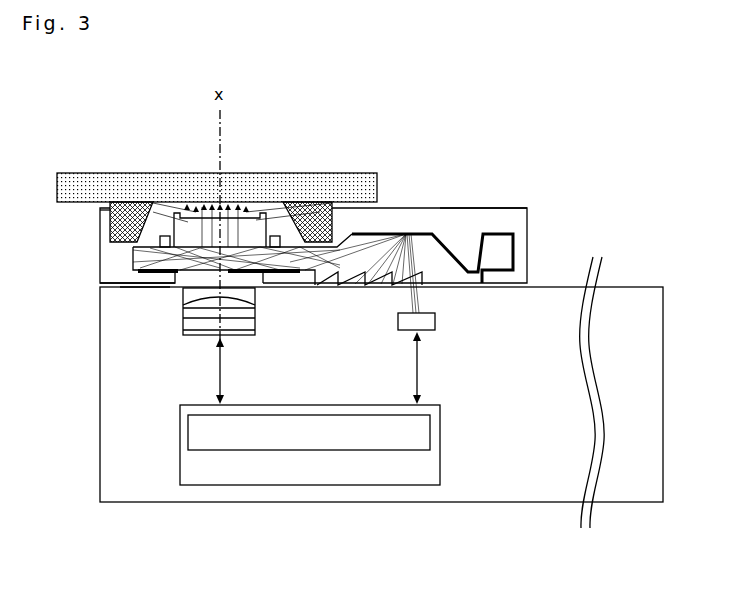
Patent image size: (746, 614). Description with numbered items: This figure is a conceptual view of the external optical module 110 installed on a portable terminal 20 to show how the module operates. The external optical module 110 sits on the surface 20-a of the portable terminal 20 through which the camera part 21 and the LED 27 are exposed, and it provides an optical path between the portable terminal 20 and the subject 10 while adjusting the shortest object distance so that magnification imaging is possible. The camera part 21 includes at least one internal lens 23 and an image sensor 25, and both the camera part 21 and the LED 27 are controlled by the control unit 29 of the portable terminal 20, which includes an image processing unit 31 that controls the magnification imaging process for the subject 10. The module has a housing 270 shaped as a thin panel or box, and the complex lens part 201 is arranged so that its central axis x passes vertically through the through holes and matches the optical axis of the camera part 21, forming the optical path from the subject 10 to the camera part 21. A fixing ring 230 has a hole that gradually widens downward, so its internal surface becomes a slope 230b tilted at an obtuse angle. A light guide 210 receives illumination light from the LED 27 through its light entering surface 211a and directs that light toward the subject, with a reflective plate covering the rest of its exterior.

The subject 10 is at (366, 173).
The slope 230b is at (163, 200).
The fixing ring 230 is at (100, 210).
The complex lens part 201 is at (172, 228).
The external optical module 110 is at (534, 219).
The housing 270 is at (505, 208).
The light guide 210 is at (430, 233).
The light entering surface 211a is at (350, 270).
The portable terminal 20 is at (450, 503).
The surface 20-a is at (145, 288).
The camera part 21 is at (229, 341).
The internal lens 23 is at (252, 303).
The image sensor 25 is at (256, 328).
The LED 27 is at (437, 318).
The control unit 29 is at (341, 445).
The image processing unit 31 is at (428, 432).